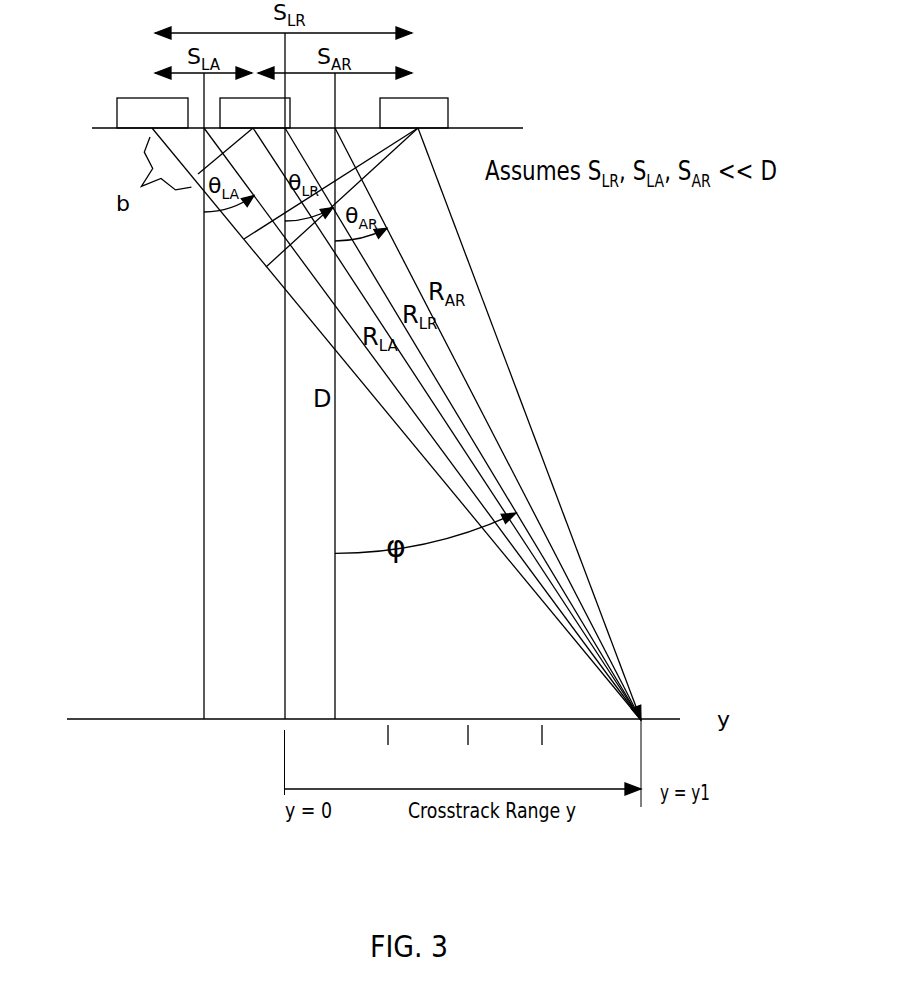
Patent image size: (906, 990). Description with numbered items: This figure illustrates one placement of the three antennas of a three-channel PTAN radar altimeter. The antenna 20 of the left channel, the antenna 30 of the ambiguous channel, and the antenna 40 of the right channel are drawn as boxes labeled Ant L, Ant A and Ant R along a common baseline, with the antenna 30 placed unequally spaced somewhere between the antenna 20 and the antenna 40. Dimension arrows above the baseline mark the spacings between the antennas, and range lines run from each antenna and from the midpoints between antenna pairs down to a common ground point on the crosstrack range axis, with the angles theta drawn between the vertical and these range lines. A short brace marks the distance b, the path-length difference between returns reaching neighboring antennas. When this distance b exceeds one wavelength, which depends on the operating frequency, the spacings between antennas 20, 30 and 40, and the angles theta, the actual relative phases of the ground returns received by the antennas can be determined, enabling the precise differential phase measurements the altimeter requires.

The antenna 20 is at (117, 108).
The antenna 30 is at (290, 118).
The antenna 40 is at (448, 115).